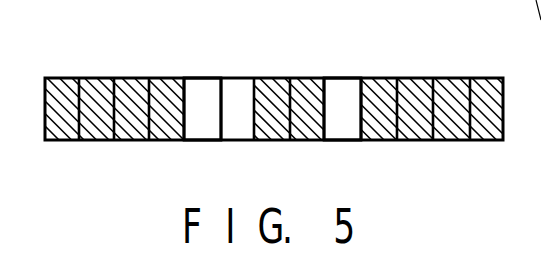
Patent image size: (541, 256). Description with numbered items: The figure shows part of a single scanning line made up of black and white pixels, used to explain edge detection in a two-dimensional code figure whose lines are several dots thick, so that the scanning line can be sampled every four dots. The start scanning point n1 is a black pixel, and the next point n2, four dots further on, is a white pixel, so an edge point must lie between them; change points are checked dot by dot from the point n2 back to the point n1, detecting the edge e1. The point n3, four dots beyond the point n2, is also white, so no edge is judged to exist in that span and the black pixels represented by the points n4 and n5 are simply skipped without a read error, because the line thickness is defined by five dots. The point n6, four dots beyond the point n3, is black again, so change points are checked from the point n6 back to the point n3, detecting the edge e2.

The start scanning point n1 is at (63, 78).
The point n2 is at (202, 78).
The point n3 is at (342, 78).
The black pixel point n4 is at (274, 127).
The black pixel point n5 is at (309, 128).
The point n6 is at (484, 78).
The edge e1 is at (190, 112).
The edge e2 is at (362, 120).